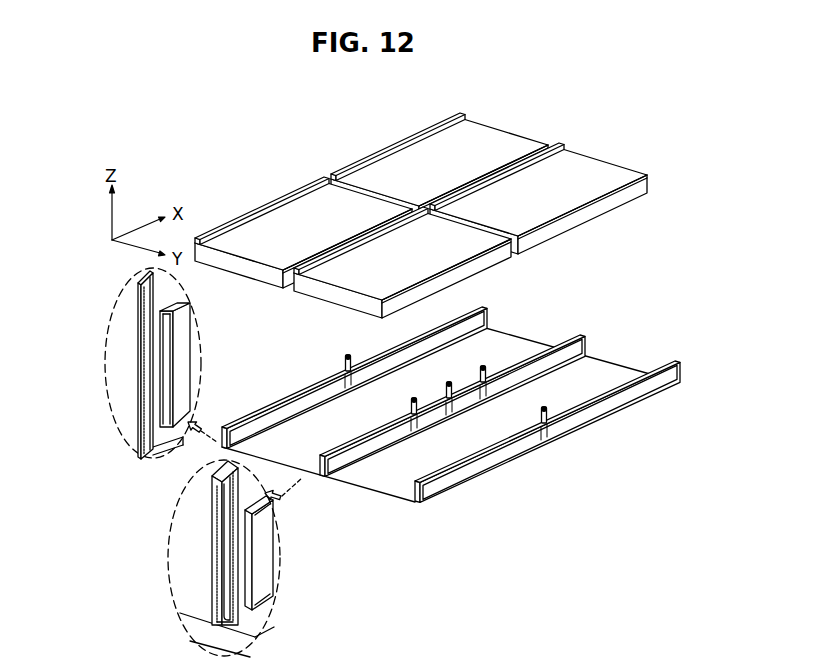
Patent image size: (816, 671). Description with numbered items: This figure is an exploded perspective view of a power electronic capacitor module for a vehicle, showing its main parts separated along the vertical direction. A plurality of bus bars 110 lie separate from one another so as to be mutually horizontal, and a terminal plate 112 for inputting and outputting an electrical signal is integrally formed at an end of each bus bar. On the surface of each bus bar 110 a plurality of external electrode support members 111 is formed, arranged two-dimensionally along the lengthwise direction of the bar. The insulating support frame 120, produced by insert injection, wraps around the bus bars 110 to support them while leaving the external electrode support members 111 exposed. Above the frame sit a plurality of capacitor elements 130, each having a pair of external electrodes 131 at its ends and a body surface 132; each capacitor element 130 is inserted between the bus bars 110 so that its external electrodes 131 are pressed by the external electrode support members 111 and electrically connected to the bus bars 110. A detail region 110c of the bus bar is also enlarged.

The bus bar 110 is at (145, 358).
The channel groove 110c is at (218, 540).
The external electrode support member 111 is at (318, 400).
The terminal plate 112 is at (343, 366).
The insulating support frame 120 is at (593, 374).
The capacitor element 130 is at (431, 210).
The external electrode 131 is at (258, 222).
The panel top surface 132 is at (285, 233).